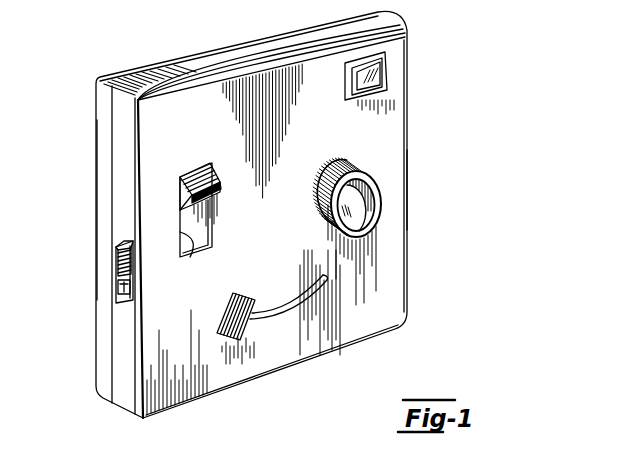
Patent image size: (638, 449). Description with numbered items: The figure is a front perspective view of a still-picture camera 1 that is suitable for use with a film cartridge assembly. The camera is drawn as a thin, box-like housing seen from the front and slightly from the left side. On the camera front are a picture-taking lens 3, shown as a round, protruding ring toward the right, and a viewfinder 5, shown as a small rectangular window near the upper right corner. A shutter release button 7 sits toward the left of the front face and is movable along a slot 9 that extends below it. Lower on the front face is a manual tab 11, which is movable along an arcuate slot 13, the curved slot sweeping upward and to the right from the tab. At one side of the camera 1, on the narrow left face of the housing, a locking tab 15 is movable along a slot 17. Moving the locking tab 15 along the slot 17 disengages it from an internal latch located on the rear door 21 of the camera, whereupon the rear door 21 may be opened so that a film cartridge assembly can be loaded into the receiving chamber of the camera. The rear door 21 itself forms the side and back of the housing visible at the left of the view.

The still-picture camera 1 is at (432, 196).
The picture-taking lens 3 is at (352, 207).
The viewfinder 5 is at (380, 75).
The shutter release button 7 is at (187, 170).
The slot 9 is at (192, 250).
The manual tab 11 is at (253, 298).
The arcuate slot 13 is at (277, 312).
The locking tab 15 is at (116, 263).
The slot 17 is at (118, 287).
The rear door 21 is at (104, 177).